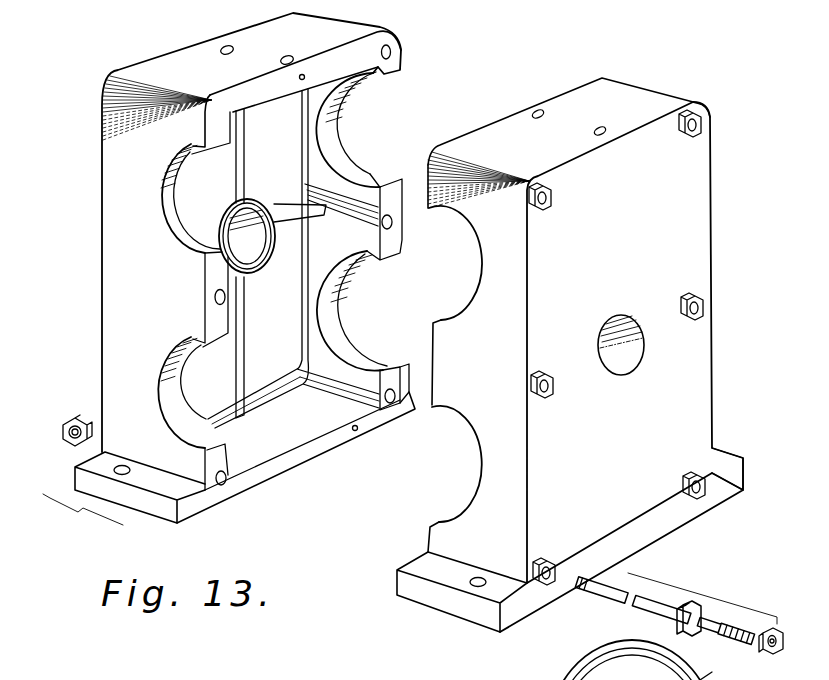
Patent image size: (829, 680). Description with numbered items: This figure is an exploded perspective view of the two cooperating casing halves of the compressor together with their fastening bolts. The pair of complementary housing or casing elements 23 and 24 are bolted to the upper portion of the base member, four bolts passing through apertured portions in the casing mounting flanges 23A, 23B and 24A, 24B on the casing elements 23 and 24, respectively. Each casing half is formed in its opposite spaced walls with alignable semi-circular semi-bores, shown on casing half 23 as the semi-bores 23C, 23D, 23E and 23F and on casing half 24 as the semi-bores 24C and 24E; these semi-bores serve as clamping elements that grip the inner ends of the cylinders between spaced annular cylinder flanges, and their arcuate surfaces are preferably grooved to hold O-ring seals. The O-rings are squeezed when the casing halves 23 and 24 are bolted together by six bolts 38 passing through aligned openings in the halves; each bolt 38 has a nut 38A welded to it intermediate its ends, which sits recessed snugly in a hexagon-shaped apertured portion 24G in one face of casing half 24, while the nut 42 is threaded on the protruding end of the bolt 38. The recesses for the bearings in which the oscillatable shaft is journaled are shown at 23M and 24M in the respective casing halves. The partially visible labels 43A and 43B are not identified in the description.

The casing element 23 is at (106, 127).
The casing mounting flange 23A is at (173, 527).
The casing mounting flange 23B is at (406, 378).
The semi-circular semi-bore 23C is at (195, 246).
The semi-circular semi-bore 23D is at (363, 153).
The semi-circular semi-bore 23E is at (210, 437).
The semi-circular semi-bore 23F is at (368, 340).
The bearing recess 23M is at (254, 270).
The casing element 24 is at (700, 177).
The casing mounting flange 24A is at (473, 617).
The casing mounting flange 24B is at (720, 453).
The semi-circular semi-bore 24C is at (467, 263).
The semi-circular semi-bore 24E is at (470, 480).
The hexagon-shaped apertured portion 24G is at (553, 590).
The bearing recess 24M is at (628, 368).
The bolt 38 is at (599, 593).
The nut 38A is at (688, 637).
The nut 42 is at (58, 433).
The ring member 43A is at (741, 673).
The ring member 43B is at (608, 660).